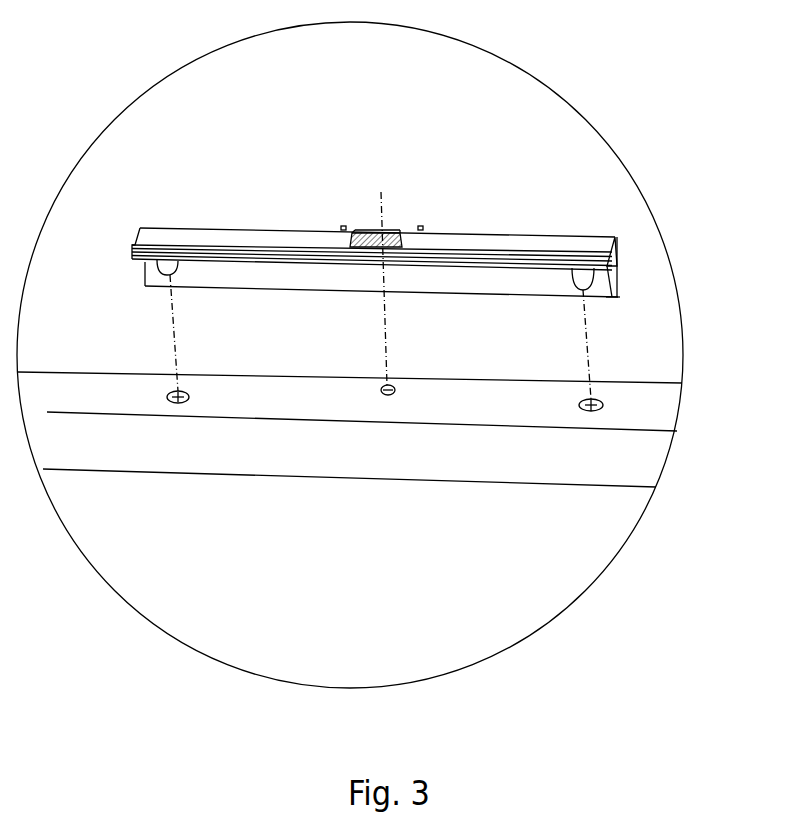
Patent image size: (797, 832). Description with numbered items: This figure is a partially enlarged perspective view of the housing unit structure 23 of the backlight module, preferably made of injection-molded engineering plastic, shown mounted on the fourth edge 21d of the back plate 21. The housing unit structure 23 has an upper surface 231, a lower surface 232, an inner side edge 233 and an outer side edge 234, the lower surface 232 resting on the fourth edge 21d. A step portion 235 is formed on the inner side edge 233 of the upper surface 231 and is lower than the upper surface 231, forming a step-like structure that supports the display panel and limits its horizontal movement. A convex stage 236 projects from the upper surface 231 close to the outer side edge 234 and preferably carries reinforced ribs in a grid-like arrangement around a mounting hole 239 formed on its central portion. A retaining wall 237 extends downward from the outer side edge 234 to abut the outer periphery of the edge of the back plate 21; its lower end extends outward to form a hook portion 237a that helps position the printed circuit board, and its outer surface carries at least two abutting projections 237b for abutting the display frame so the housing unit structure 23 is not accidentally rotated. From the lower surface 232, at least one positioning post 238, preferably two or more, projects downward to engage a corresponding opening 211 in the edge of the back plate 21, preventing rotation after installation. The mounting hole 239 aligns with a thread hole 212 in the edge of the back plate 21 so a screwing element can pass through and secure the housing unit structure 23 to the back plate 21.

The back plate 21 is at (555, 517).
The fourth edge 21d is at (288, 398).
The opening 211 is at (188, 405).
The thread hole 212 is at (393, 397).
The housing unit structure 23 is at (546, 176).
The upper surface 231 is at (533, 243).
The lower surface 232 is at (622, 253).
The inner side edge 233 is at (494, 266).
The outer side edge 234 is at (494, 234).
The step portion 235 is at (345, 266).
The convex stage 236 is at (352, 232).
The retaining wall 237 is at (147, 269).
The hook portion 237a is at (591, 274).
The abutting projection 237b is at (341, 228).
The positioning post 238 is at (185, 266).
The mounting hole 239 is at (387, 231).